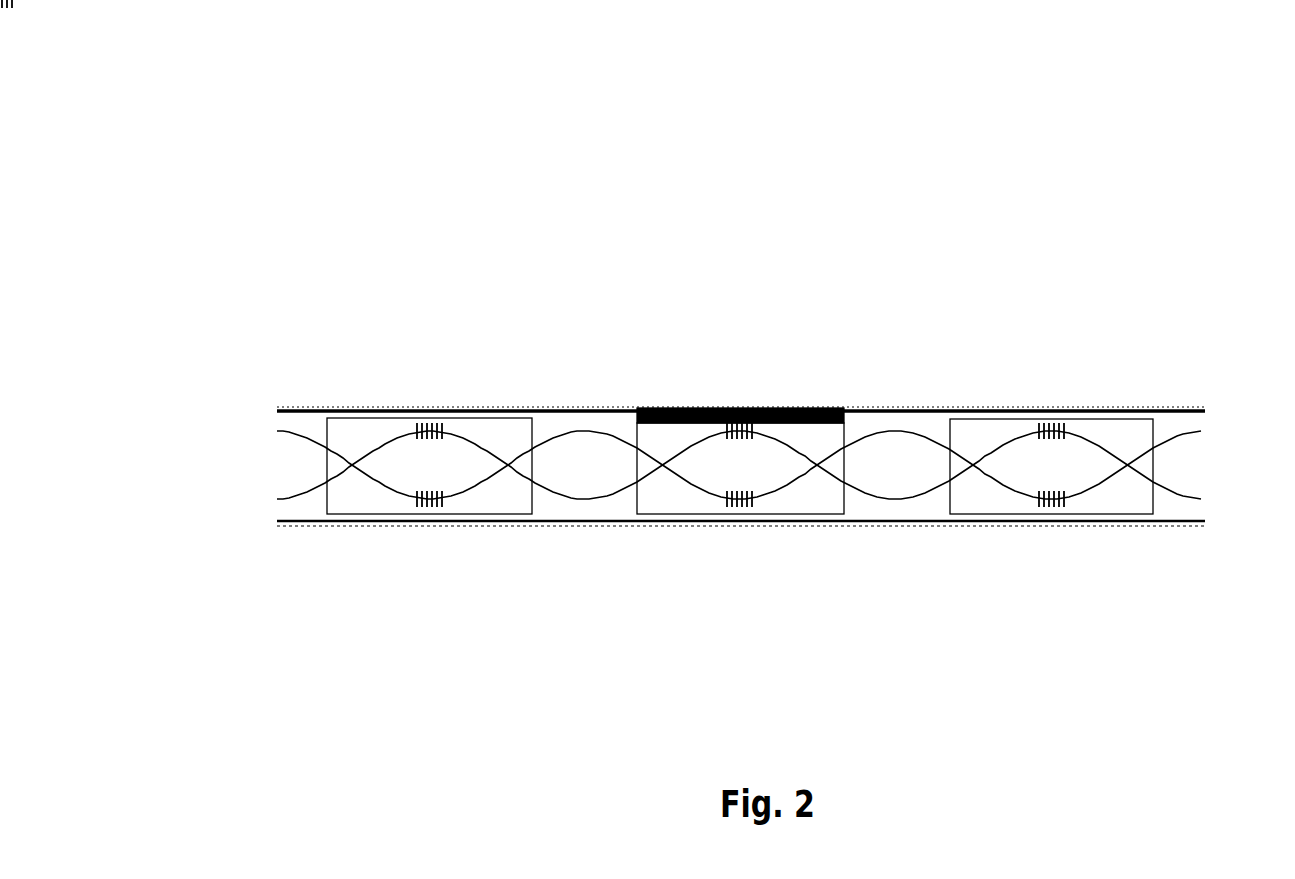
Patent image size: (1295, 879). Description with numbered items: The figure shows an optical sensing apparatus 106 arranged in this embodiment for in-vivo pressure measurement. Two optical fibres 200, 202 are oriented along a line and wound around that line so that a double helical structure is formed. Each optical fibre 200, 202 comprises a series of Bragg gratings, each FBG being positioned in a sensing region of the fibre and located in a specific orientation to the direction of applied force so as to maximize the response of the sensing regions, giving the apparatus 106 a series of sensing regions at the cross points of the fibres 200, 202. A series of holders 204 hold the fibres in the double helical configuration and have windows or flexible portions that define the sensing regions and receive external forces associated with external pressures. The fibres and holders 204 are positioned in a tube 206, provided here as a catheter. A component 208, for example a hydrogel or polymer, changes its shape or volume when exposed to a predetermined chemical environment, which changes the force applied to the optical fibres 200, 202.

The optical sensing apparatus 106 is at (829, 164).
The optical fibre 200 is at (299, 414).
The optical fibre 202 is at (283, 474).
The holder 204 is at (1095, 389).
The tube 206 is at (501, 392).
The component 208 is at (763, 408).
The Bragg grating FBG is at (411, 532).